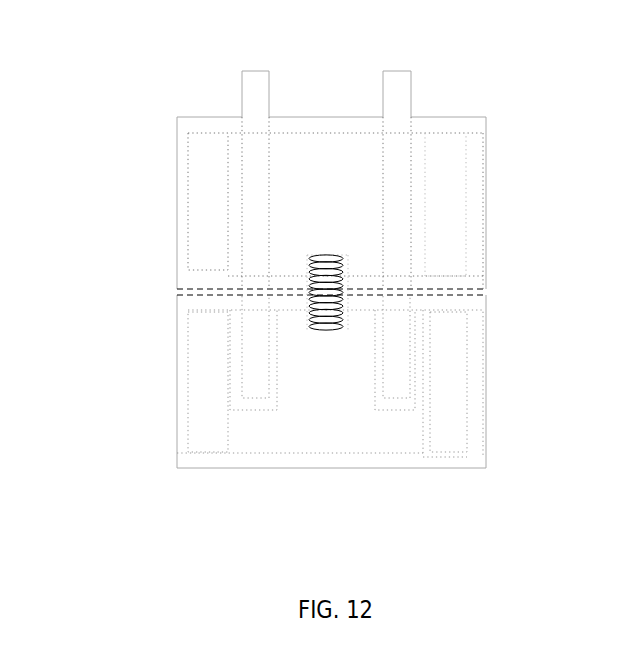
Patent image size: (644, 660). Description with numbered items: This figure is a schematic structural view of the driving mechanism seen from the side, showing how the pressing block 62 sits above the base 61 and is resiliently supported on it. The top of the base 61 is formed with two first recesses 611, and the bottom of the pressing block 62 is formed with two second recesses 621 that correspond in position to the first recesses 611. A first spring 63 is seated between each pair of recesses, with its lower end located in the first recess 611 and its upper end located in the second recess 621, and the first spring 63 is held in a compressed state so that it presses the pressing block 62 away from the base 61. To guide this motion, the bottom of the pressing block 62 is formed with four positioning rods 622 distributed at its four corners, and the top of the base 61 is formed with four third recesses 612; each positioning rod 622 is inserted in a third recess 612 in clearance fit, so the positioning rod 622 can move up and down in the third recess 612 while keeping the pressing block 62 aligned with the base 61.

The pressing block 62 is at (472, 117).
The base 61 is at (478, 468).
The first spring 63 is at (330, 318).
The second recess 621 is at (305, 265).
The positioning rod 622 is at (252, 331).
The first recess 611 is at (305, 322).
The third recess 612 is at (242, 406).